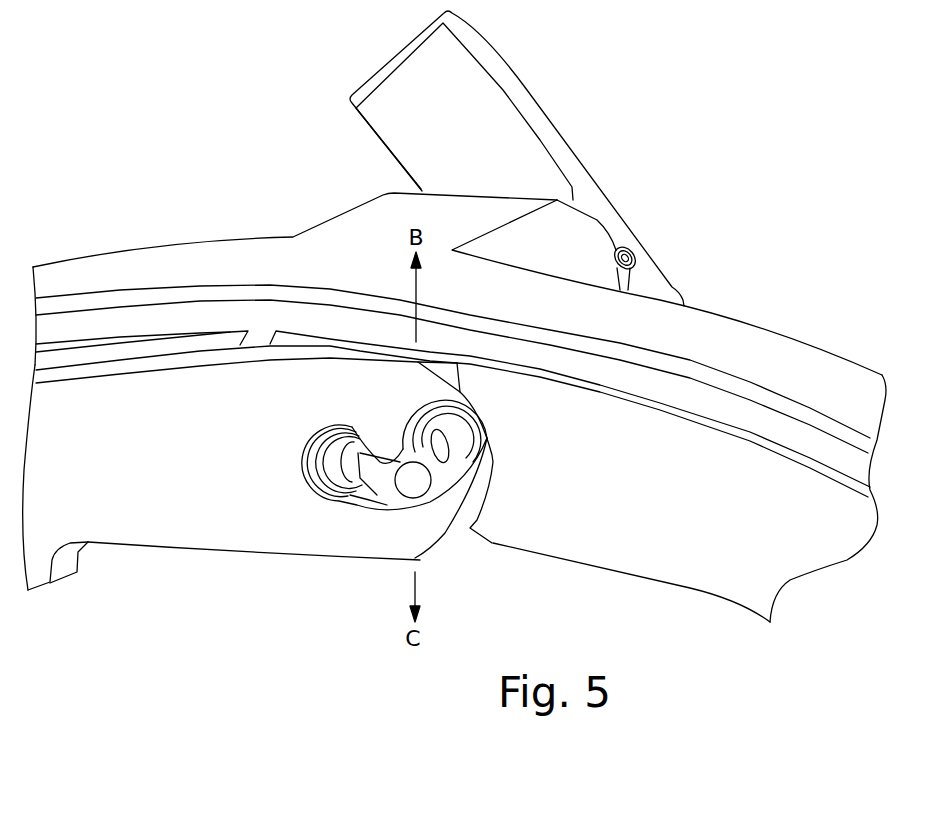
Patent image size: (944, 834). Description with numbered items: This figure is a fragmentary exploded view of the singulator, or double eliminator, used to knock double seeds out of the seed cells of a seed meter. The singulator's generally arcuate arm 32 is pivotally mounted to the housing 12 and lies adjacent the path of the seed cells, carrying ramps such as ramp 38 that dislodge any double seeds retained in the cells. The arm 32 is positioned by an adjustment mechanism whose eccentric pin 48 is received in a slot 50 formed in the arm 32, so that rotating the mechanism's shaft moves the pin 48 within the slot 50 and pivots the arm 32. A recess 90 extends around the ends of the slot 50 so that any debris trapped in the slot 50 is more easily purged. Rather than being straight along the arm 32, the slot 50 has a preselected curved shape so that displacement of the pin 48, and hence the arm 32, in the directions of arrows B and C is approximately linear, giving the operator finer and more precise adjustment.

The housing 12 is at (233, 258).
The arm 32 is at (147, 465).
The ramp 38 is at (153, 548).
The eccentric pin 48 is at (455, 463).
The slot 50 is at (379, 480).
The recess 90 is at (333, 508).